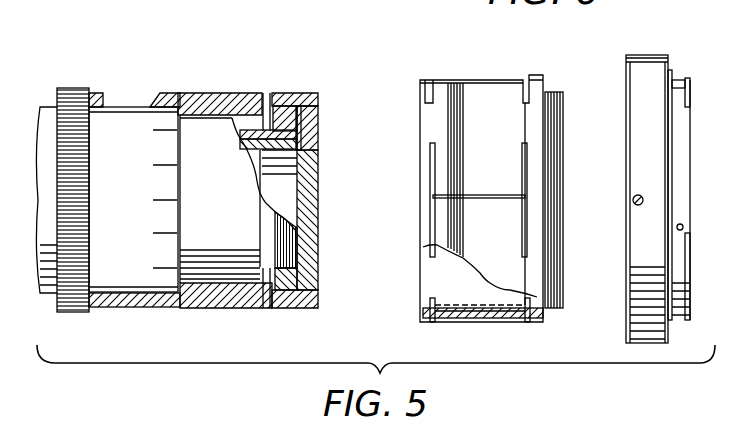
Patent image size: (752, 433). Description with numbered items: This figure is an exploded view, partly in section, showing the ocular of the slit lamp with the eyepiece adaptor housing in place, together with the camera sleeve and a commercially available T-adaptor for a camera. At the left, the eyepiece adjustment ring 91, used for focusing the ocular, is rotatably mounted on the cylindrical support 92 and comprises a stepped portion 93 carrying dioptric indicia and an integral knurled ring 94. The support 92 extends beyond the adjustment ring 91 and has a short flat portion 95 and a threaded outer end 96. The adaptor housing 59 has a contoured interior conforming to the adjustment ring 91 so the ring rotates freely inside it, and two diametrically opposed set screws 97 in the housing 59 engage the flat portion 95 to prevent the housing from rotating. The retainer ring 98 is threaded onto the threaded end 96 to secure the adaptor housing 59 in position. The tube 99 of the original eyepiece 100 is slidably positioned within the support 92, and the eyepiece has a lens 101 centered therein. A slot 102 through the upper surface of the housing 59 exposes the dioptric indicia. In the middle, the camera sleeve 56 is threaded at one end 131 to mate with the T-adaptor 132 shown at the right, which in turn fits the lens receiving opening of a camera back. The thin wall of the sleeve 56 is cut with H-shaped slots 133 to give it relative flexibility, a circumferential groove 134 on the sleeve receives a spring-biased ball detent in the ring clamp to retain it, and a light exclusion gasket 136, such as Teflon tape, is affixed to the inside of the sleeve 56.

The camera sleeve 56 is at (504, 65).
The adaptor housing 59 is at (187, 93).
The eyepiece adjustment ring 91 is at (218, 120).
The cylindrical support 92 is at (242, 137).
The stepped portion 93 is at (122, 110).
The knurled ring 94 is at (77, 88).
The flat portion 95 is at (278, 120).
The threaded outer end 96 is at (306, 128).
The set screw 97 is at (266, 98).
The retainer ring 98 is at (290, 308).
The tube 99 is at (263, 157).
The original eyepiece 100 is at (318, 138).
The lens 101 is at (318, 202).
The slot 102 is at (153, 106).
The threaded end 131 is at (555, 92).
The T-adaptor 132 is at (665, 48).
The H-shaped slots 133 is at (431, 80).
The circumferential groove 134 is at (457, 316).
The light exclusion gasket 136 is at (460, 312).